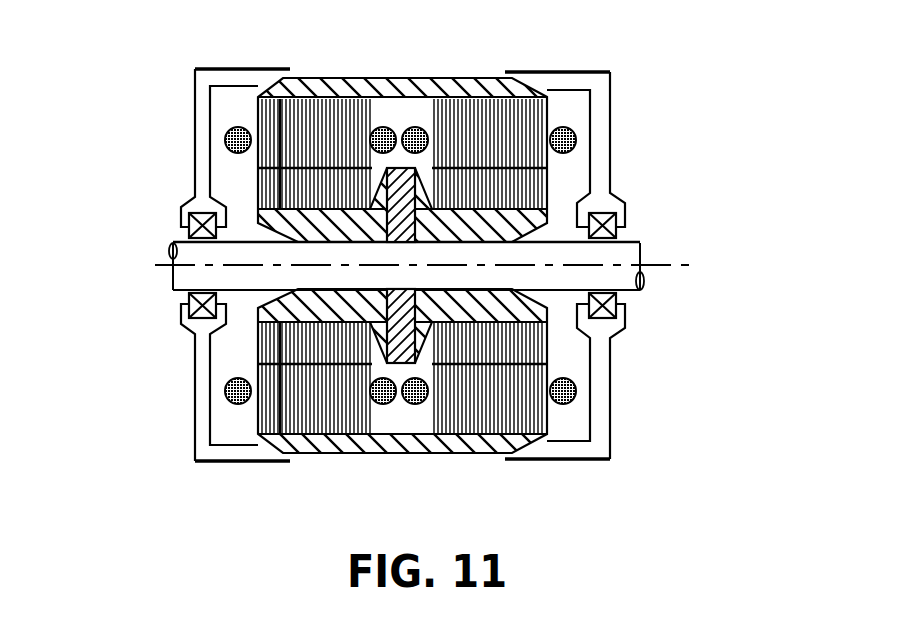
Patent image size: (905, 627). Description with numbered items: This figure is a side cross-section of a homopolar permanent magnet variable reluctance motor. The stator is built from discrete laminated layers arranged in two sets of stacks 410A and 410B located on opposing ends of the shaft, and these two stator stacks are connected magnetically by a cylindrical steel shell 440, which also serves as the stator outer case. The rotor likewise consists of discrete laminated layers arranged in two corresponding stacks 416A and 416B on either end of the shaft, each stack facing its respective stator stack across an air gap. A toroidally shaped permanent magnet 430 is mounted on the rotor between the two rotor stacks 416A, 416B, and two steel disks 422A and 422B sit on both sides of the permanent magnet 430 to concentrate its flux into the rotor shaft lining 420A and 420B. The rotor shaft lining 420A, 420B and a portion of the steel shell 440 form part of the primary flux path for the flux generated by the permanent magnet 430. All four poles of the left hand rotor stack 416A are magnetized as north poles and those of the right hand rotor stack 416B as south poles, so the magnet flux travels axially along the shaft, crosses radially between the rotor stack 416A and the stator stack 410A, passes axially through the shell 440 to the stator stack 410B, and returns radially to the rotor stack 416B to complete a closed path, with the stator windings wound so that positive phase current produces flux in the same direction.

The left hand stator stack 410A is at (296, 118).
The right hand stator stack 410B is at (527, 118).
The left hand rotor stack 416A is at (294, 187).
The right hand rotor stack 416B is at (533, 190).
The rotor shaft lining 420A is at (310, 282).
The rotor shaft lining 420B is at (490, 286).
The steel disk 422A is at (365, 434).
The steel disk 422B is at (433, 440).
The permanent magnet 430 is at (433, 440).
The cylindrical steel shell 440 is at (383, 78).